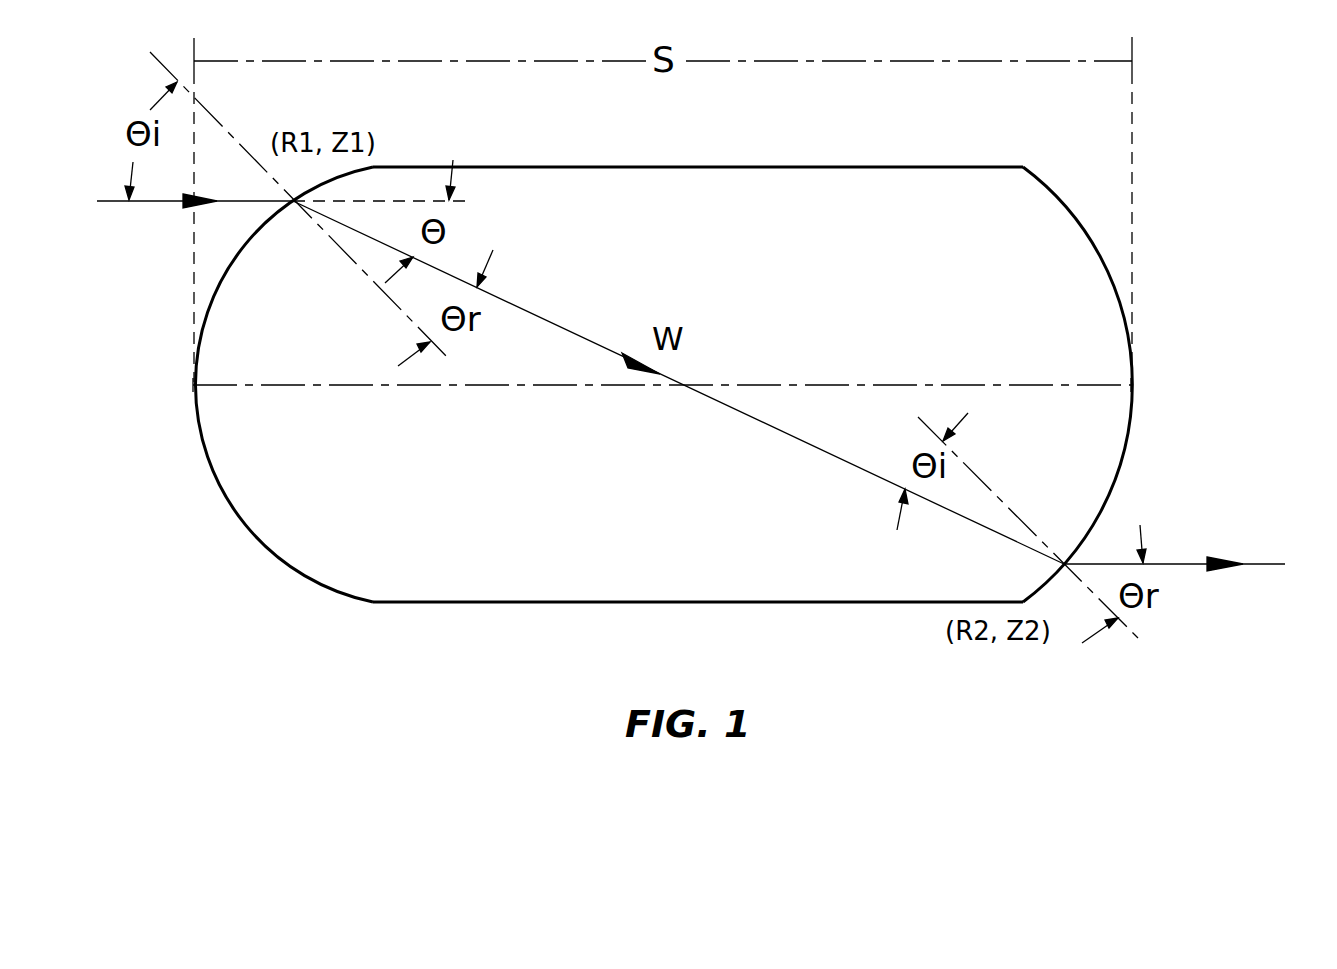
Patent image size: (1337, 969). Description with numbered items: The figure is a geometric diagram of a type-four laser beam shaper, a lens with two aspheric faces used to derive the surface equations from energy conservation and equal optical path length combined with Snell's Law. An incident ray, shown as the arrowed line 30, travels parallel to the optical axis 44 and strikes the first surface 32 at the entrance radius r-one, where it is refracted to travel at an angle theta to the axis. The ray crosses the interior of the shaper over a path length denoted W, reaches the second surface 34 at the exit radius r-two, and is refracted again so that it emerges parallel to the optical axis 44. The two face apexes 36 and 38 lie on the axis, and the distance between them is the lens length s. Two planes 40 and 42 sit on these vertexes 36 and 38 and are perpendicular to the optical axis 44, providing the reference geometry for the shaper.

The arrowed line 30 is at (778, 430).
The first surface 32 is at (253, 232).
The surface 34 is at (1113, 483).
The face apex 36 is at (193, 384).
The face apex 38 is at (1131, 387).
The plane 40 is at (194, 276).
The plane 42 is at (1132, 258).
The optical axis 44 is at (937, 385).